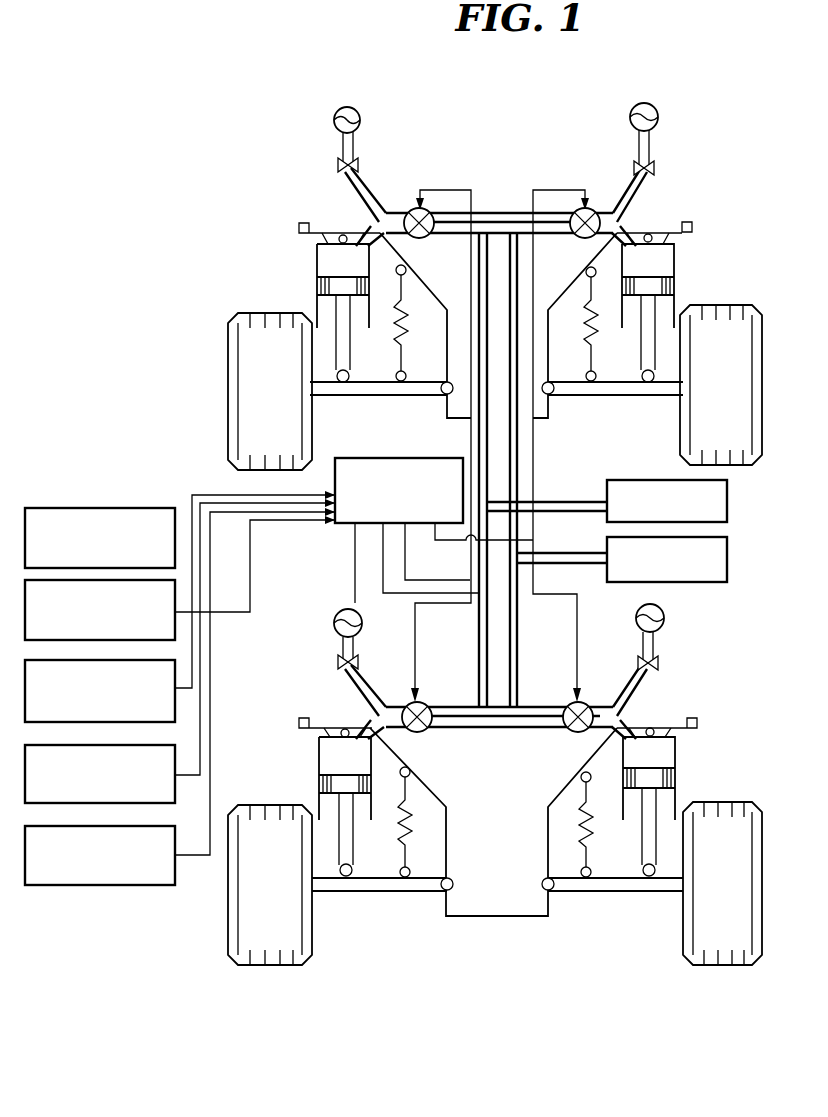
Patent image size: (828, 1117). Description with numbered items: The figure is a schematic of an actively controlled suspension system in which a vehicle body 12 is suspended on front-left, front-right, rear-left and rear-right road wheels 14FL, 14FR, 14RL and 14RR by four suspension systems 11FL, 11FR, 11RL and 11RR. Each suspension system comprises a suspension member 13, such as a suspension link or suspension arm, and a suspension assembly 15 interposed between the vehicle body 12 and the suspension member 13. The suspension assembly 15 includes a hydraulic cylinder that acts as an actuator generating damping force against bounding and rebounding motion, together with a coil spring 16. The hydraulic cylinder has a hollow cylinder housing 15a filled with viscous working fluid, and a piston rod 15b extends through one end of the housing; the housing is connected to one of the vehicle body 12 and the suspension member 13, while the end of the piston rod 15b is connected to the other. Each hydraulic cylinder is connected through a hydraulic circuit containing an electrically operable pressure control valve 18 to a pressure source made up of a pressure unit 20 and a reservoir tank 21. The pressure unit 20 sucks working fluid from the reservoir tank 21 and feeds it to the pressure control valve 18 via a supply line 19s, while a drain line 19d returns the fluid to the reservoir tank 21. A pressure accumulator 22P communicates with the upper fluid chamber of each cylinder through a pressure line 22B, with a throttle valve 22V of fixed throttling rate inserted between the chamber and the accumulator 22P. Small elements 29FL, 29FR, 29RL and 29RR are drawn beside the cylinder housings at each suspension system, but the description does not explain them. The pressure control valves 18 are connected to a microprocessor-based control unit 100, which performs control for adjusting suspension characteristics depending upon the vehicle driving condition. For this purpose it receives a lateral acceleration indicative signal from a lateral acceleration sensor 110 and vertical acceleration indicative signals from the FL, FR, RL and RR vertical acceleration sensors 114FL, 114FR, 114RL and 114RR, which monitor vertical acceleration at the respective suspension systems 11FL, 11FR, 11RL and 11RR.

The rear-right suspension system 11RR is at (298, 261).
The rear-left suspension system 11RL is at (694, 262).
The front-right suspension system 11FR is at (304, 762).
The front-left suspension system 11FL is at (695, 762).
The vehicle body 12 is at (540, 432).
The suspension member 13 is at (362, 394).
The rear-right road wheel 14RR is at (243, 340).
The rear-left road wheel 14RL is at (720, 304).
The front-right road wheel 14FR is at (274, 958).
The front-left road wheel 14FL is at (700, 958).
The suspension assembly 15 is at (314, 300).
The cylinder housing 15a is at (336, 236).
The piston rod 15b is at (652, 382).
The coil spring 16 is at (396, 330).
The pressure control valve 18 is at (410, 208).
The supply line 19s is at (478, 598).
The drain line 19d is at (517, 622).
The pressure unit 20 is at (636, 480).
The reservoir tank 21 is at (606, 552).
The pressure accumulator 22P is at (357, 116).
The throttle valve 22V is at (340, 165).
The pressure line 22B is at (355, 198).
The rear right vehicle height sensor 29RR is at (297, 222).
The rear left vehicle height sensor 29RL is at (694, 223).
The front right vehicle height sensor 29FR is at (298, 724).
The front left vehicle height sensor 29FL is at (698, 718).
The control unit 100 is at (335, 528).
The lateral acceleration sensor 110 is at (150, 496).
The FL vertical acceleration sensor 114FL is at (180, 622).
The FR vertical acceleration sensor 114FR is at (180, 670).
The RL vertical acceleration sensor 114RL is at (180, 760).
The RR vertical acceleration sensor 114RR is at (155, 886).